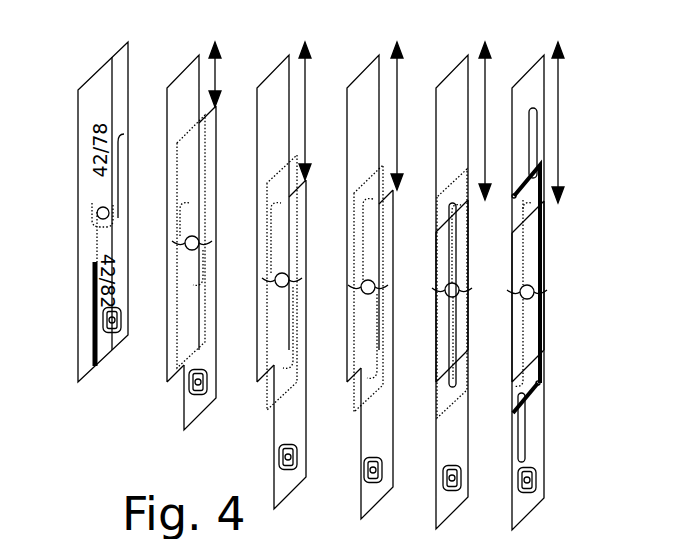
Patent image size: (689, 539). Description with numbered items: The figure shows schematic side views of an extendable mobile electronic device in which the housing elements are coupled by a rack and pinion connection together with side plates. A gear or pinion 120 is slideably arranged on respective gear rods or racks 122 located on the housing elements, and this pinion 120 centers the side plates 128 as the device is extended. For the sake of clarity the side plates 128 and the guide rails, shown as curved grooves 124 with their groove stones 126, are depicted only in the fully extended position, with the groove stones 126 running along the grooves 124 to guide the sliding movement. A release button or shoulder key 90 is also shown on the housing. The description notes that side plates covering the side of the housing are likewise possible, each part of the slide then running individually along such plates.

The release button/shoulder key 90 is at (112, 334).
The gearwheel/pinion 120 is at (110, 206).
The rack 122 is at (97, 268).
The groove (curved) 124 is at (516, 428).
The groove stone 126 is at (513, 196).
The side plate 128 is at (267, 388).